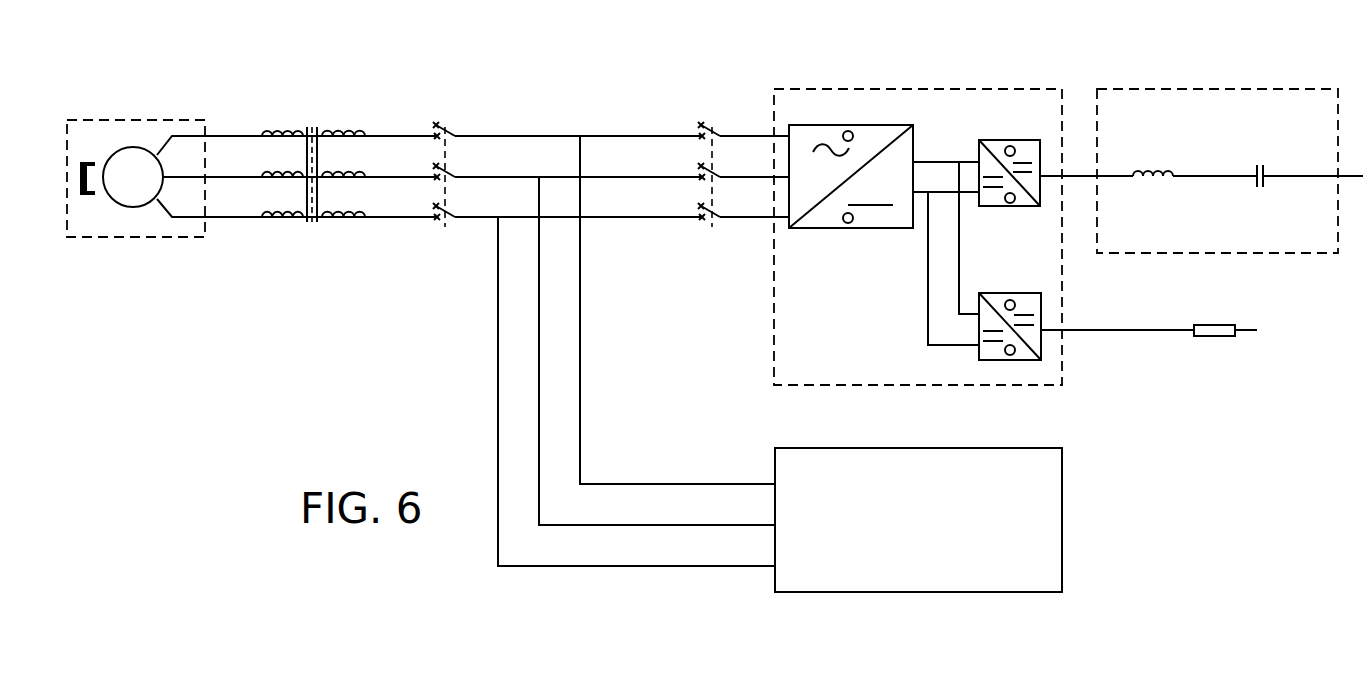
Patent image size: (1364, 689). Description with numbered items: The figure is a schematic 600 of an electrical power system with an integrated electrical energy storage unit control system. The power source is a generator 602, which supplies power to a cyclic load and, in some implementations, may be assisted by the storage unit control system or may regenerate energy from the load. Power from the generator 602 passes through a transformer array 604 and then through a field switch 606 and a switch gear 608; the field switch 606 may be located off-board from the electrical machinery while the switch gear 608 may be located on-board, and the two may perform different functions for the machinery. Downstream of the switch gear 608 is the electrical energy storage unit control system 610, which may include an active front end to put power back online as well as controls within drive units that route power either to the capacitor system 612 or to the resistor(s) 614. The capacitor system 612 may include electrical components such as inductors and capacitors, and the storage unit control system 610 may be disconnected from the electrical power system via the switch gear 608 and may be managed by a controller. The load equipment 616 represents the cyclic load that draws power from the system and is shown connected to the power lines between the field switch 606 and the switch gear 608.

The schematic 600 is at (387, 315).
The generator 602 is at (146, 128).
The transformer array 604 is at (313, 124).
The field switch 606 is at (437, 108).
The switch gear 608 is at (702, 108).
The electrical energy storage unit control system 610 is at (859, 100).
The capacitor system 612 is at (1201, 103).
The resistor(s) 614 is at (1212, 340).
The load equipment 616 is at (1050, 523).